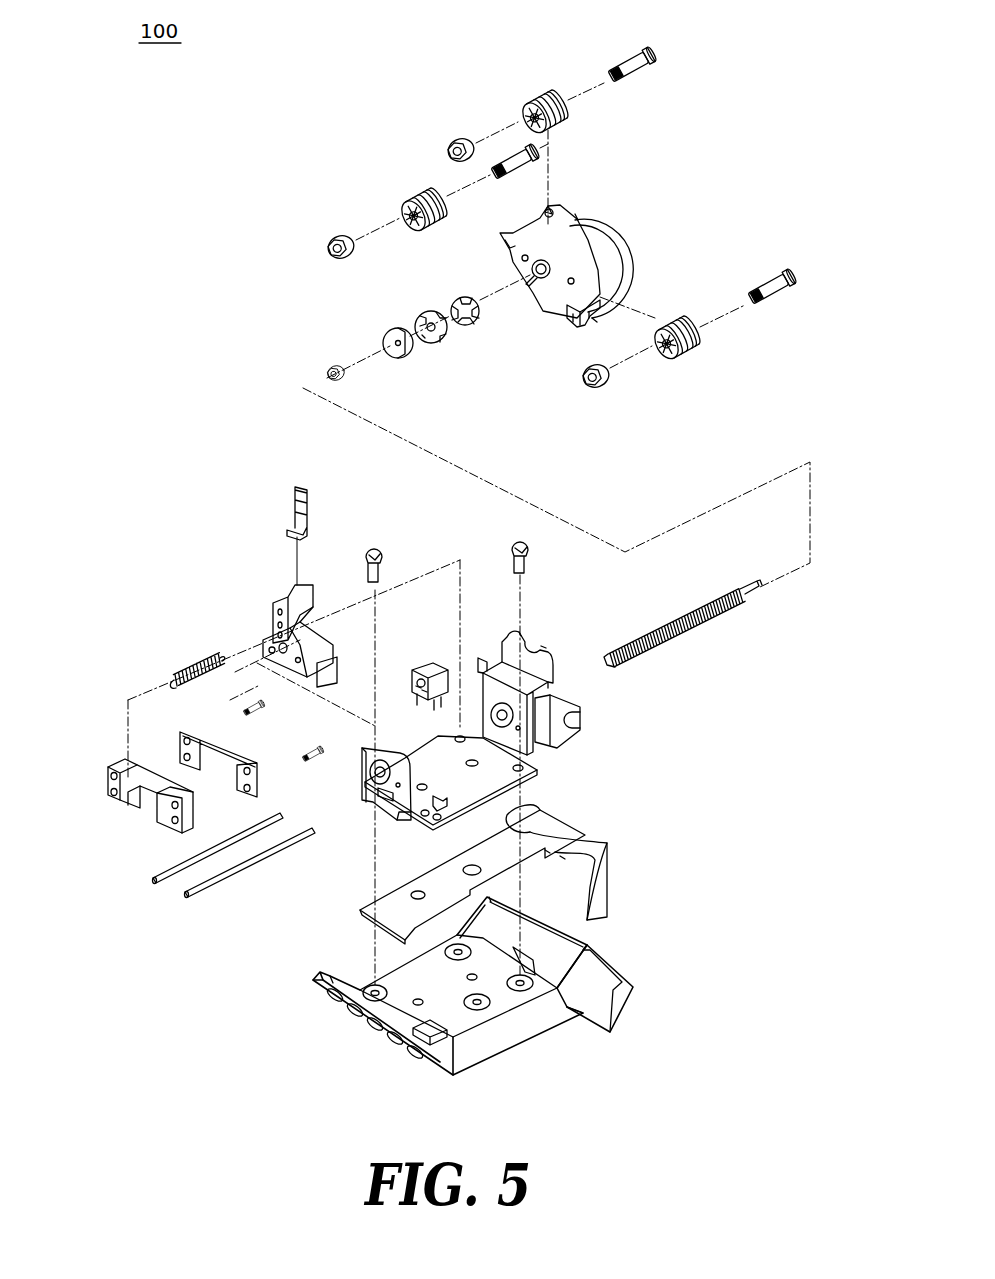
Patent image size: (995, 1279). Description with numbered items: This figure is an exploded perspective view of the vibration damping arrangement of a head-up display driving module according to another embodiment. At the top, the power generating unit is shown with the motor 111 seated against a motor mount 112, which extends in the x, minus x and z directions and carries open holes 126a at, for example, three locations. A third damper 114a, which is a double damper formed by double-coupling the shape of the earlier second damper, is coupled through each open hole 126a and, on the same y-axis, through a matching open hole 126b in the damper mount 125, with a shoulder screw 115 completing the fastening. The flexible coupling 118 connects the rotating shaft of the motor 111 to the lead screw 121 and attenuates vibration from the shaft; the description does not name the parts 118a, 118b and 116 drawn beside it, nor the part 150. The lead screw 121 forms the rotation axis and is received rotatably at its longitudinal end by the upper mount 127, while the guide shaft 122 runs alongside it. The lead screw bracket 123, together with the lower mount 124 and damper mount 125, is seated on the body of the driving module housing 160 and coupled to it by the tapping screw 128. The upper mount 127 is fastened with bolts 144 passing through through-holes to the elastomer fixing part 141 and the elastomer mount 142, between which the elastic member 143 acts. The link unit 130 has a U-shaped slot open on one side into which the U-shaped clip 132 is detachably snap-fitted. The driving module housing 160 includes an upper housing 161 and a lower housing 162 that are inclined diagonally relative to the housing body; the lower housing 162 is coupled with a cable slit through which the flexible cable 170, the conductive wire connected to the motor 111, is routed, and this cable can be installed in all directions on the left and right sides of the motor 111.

The motor 111 is at (577, 228).
The motor mount 112 is at (505, 258).
The third damper 114a is at (541, 95).
The shoulder screw 115 is at (765, 283).
The nut 116 is at (610, 378).
The flexible coupling 118 is at (436, 319).
The coupling disc 118a is at (423, 355).
The coupling member 118b is at (483, 322).
The lead screw 121 is at (680, 616).
The guide shaft 122 is at (265, 858).
The lead screw bracket 123 is at (520, 783).
The lower mount 124 is at (527, 757).
The damper mount 125 is at (538, 648).
The open hole 126a is at (590, 322).
The open hole 126b is at (588, 720).
The upper mount 127 is at (357, 768).
The tapping screw 128 is at (527, 565).
The link unit 130 is at (264, 595).
The clip 132 is at (290, 508).
The elastomer fixing part 141 is at (120, 762).
The elastomer mount 142 is at (198, 733).
The elastic member 143 is at (190, 658).
The bolts 144 is at (308, 748).
The switch 150 is at (422, 670).
The driving module housing 160 is at (488, 990).
The upper housing 161 is at (350, 1044).
The lower housing 162 is at (605, 990).
The flexible cable 170 is at (622, 888).